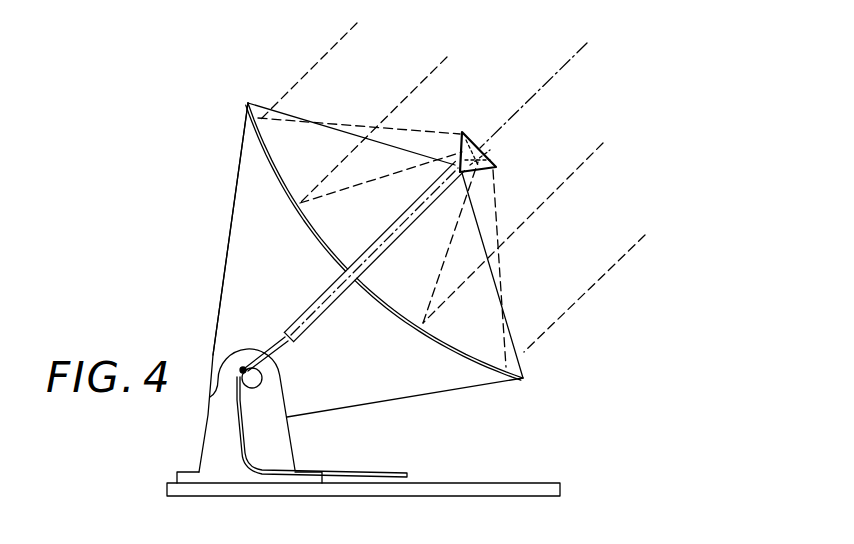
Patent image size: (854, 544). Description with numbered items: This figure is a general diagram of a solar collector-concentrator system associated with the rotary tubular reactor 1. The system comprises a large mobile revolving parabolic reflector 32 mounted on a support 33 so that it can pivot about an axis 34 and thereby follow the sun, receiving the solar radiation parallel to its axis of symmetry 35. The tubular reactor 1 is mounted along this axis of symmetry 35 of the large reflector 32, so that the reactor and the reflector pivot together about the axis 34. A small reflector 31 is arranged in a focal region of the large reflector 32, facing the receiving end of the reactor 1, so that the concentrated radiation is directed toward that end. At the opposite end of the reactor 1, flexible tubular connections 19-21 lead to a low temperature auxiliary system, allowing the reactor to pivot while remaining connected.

The rotary tubular reactor 1 is at (397, 238).
The flexible tubular connections 19-21 is at (266, 352).
The small reflector 31 is at (487, 150).
The large mobile revolving parabolic reflector 32 is at (316, 230).
The support 33 is at (224, 270).
The axis 34 is at (262, 378).
The axis of symmetry 35 is at (532, 98).